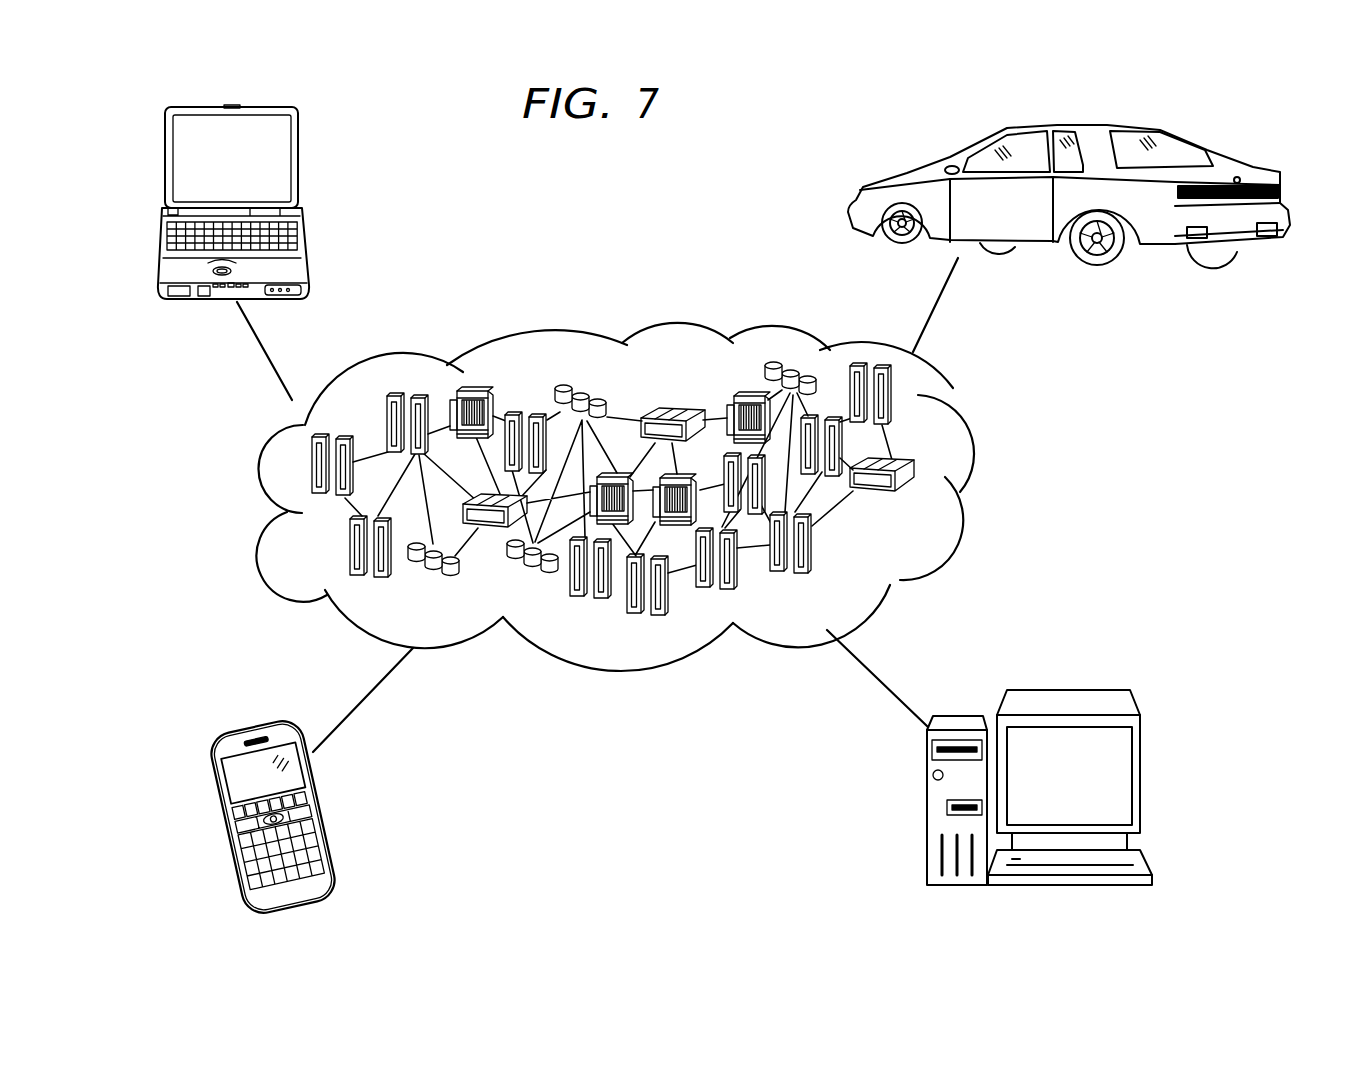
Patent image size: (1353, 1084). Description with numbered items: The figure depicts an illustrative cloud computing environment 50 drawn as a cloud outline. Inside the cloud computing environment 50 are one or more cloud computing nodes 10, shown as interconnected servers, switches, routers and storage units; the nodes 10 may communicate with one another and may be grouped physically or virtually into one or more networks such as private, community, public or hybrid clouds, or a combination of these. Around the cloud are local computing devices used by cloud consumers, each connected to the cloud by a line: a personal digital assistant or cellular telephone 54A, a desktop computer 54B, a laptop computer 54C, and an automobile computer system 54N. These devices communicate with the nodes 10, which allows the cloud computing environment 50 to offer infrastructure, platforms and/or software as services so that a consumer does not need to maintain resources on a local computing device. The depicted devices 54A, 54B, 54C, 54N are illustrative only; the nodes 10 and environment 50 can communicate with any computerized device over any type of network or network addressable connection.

The cloud computing node 10 is at (920, 503).
The cloud computing environment 50 is at (968, 420).
The personal digital assistant or cellular telephone 54A is at (212, 803).
The desktop computer 54B is at (1068, 690).
The laptop computer 54C is at (165, 153).
The automobile computer system 54N is at (1248, 165).